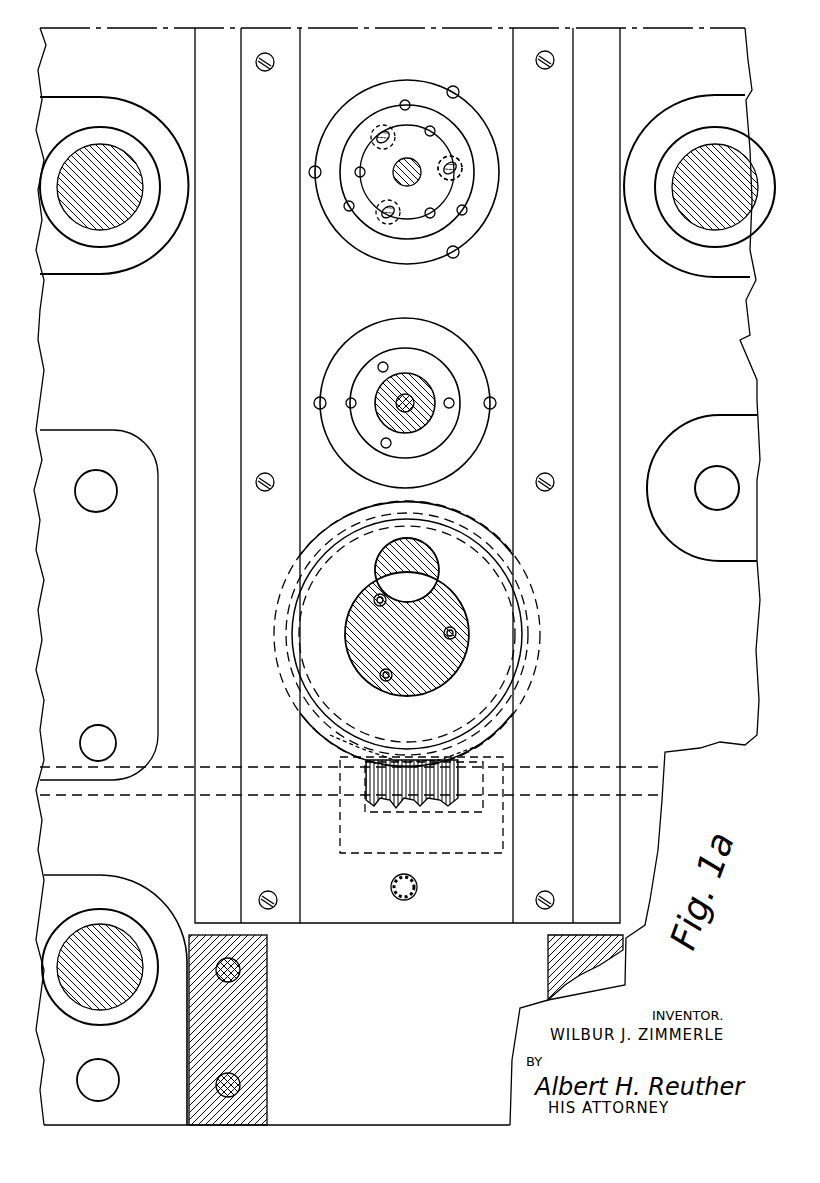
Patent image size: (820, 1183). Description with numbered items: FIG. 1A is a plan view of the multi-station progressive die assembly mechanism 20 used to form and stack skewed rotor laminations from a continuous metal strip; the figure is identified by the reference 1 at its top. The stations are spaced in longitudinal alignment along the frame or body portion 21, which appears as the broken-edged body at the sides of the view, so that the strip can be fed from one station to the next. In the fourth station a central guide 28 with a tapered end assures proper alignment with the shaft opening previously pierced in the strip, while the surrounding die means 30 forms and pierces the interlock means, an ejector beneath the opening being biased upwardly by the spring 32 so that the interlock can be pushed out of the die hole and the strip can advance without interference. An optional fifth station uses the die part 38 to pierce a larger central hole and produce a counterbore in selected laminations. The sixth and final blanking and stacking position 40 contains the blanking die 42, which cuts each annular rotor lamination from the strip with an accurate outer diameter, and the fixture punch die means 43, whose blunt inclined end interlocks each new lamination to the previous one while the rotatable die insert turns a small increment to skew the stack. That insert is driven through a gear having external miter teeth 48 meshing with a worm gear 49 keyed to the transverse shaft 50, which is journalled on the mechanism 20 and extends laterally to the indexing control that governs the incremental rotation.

The mounting plate assembly 1 is at (462, 32).
The multi-station progressive die means assembly mechanism 20 is at (770, 306).
The frame or body portion 21 is at (752, 730).
The central guide 28 is at (393, 172).
The die means 30 is at (455, 163).
The spring 32 is at (460, 175).
The die part 38 is at (410, 378).
The blanking and stacking position 40 is at (452, 545).
The blanking die 42 is at (413, 585).
The fixture punch die means 43 is at (378, 594).
The external miter teeth 48 is at (325, 740).
The worm gear 49 is at (418, 800).
The transverse shaft 50 is at (633, 780).